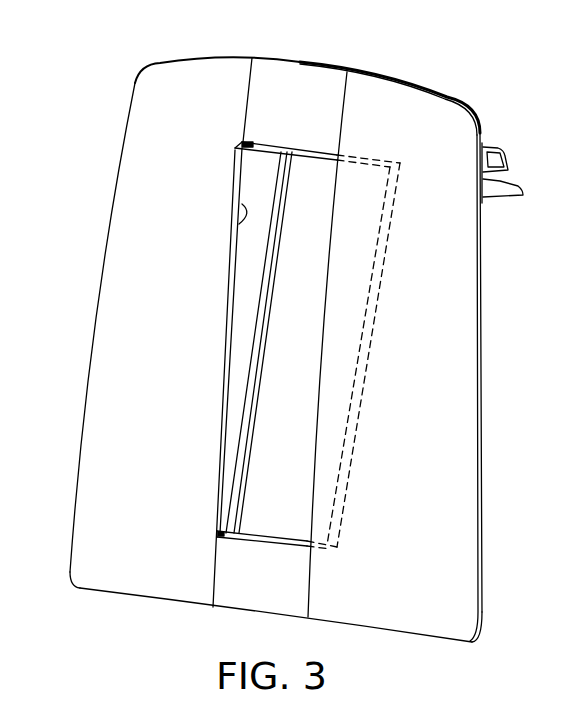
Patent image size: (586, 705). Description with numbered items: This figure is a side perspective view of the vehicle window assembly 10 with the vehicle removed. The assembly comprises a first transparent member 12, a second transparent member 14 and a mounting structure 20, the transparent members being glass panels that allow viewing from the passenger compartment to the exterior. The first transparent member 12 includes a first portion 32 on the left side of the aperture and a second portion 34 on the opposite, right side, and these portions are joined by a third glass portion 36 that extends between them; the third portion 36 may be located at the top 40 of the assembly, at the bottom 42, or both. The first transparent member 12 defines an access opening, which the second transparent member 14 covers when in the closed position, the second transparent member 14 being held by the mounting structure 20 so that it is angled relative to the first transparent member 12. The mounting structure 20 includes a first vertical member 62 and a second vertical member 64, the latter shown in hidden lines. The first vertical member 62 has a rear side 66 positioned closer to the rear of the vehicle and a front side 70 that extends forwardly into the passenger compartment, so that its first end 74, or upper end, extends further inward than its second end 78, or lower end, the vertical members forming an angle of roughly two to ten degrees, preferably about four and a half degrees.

The vehicle window assembly 10 is at (292, 344).
The first transparent member 12 is at (112, 295).
The second transparent member 14 is at (299, 326).
The mounting structure 20 is at (256, 193).
The first portion 32 is at (113, 442).
The second portion 34 is at (448, 505).
The third glass portion 36 is at (305, 88).
The top 40 is at (263, 57).
The bottom 42 is at (377, 632).
The first vertical member 62 is at (250, 262).
The second vertical member 64 is at (357, 203).
The rear side 66 is at (238, 222).
The front side 70 is at (257, 302).
The first end 74 is at (262, 167).
The second end 78 is at (225, 520).